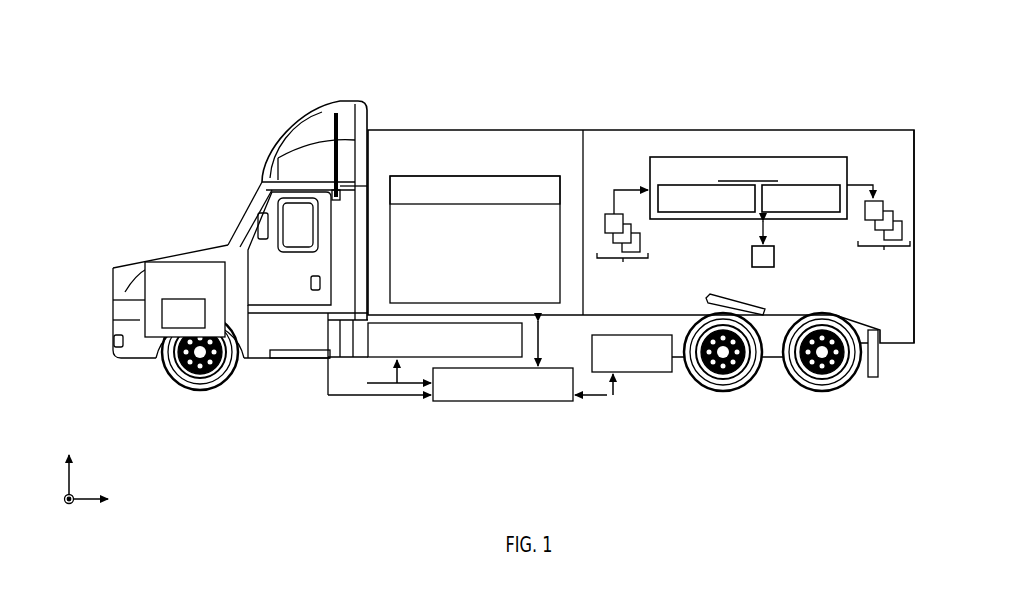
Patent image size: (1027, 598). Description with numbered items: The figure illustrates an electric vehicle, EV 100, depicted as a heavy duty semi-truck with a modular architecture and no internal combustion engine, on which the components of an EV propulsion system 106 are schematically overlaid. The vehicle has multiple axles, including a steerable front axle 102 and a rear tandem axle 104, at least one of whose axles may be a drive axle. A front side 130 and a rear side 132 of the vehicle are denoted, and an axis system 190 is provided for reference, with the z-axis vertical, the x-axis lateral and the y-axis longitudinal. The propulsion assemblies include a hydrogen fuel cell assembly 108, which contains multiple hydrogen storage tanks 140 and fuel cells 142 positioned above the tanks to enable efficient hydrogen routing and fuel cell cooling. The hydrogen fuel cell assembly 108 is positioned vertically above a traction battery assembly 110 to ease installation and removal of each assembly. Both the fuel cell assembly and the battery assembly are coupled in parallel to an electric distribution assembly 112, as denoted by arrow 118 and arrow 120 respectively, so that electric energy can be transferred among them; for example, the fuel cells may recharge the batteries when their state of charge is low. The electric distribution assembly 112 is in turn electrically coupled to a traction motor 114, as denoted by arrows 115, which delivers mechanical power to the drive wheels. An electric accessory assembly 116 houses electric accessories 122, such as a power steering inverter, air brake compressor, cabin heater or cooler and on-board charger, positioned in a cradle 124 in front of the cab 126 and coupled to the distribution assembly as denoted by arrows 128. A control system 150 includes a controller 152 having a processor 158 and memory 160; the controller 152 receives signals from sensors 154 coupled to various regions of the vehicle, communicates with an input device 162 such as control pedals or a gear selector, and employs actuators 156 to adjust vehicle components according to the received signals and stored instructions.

The electric vehicle 100 is at (122, 120).
The front axle 102 is at (192, 424).
The rear tandem axle 104 is at (762, 418).
The EV propulsion system 106 is at (453, 72).
The hydrogen fuel cell assembly 108 is at (462, 158).
The traction battery assembly 110 is at (438, 351).
The electric distribution assembly 112 is at (491, 396).
The traction motor 114 is at (618, 364).
The arrows 115 is at (605, 397).
The electric accessory assembly 116 is at (171, 288).
The arrow 118 is at (383, 379).
The arrow 120 is at (541, 343).
The electric accessories 122 is at (116, 327).
The cradle 124 is at (114, 275).
The cab 126 is at (216, 224).
The arrows 128 is at (400, 398).
The front side 130 is at (94, 290).
The rear side 132 is at (924, 276).
The hydrogen storage tanks 140 is at (462, 256).
The fuel cells 142 is at (462, 201).
The control system 150 is at (632, 172).
The controller 152 is at (695, 157).
The sensors 154 is at (622, 237).
The actuators 156 is at (878, 228).
The processor 158 is at (692, 209).
The memory 160 is at (786, 209).
The input device 162 is at (750, 257).
The axis system 190 is at (92, 462).